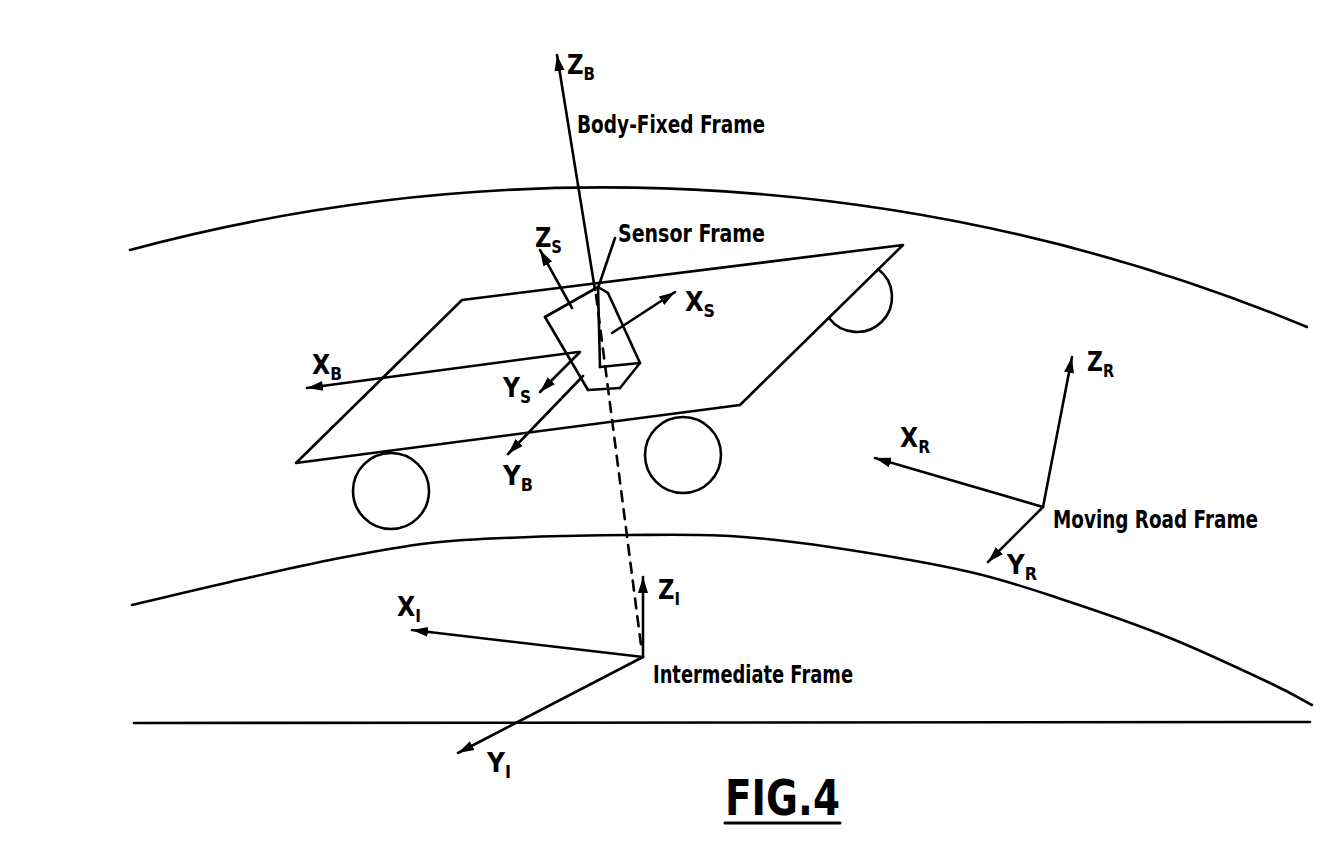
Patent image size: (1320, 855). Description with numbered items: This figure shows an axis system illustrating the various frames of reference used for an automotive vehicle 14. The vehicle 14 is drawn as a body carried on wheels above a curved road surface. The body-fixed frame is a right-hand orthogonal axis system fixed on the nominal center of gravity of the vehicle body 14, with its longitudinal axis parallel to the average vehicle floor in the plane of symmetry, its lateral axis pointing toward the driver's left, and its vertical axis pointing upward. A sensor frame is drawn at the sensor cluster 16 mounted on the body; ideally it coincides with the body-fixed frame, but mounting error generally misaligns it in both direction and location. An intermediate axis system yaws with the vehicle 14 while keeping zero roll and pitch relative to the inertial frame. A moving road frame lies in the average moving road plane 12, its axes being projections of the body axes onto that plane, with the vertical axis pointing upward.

The automotive vehicle 14 is at (788, 365).
The sensor cluster 16 is at (592, 338).
The road surface 12 is at (721, 455).